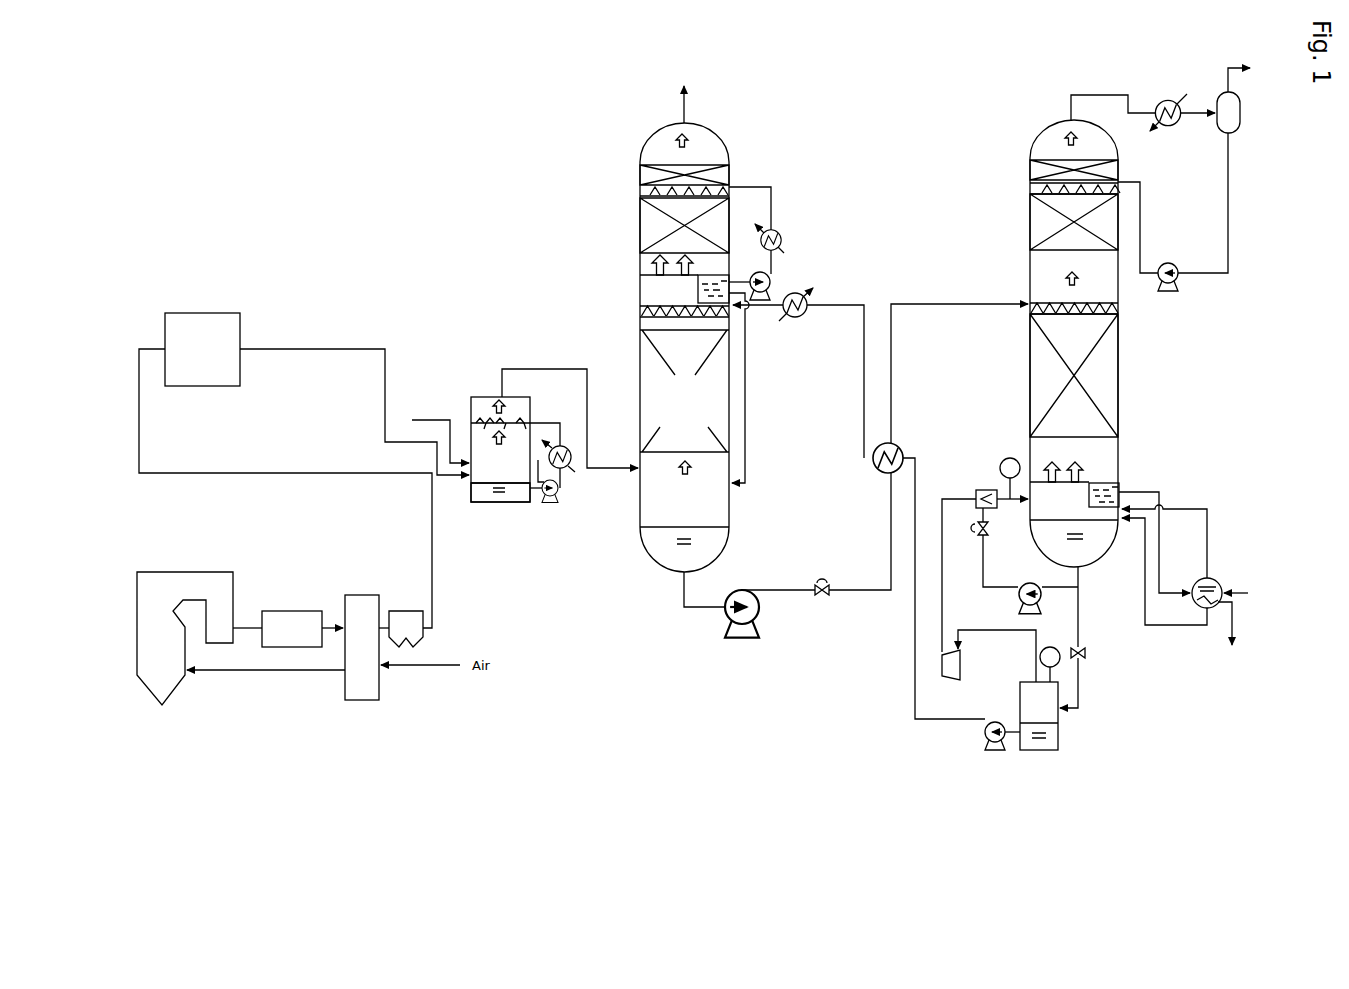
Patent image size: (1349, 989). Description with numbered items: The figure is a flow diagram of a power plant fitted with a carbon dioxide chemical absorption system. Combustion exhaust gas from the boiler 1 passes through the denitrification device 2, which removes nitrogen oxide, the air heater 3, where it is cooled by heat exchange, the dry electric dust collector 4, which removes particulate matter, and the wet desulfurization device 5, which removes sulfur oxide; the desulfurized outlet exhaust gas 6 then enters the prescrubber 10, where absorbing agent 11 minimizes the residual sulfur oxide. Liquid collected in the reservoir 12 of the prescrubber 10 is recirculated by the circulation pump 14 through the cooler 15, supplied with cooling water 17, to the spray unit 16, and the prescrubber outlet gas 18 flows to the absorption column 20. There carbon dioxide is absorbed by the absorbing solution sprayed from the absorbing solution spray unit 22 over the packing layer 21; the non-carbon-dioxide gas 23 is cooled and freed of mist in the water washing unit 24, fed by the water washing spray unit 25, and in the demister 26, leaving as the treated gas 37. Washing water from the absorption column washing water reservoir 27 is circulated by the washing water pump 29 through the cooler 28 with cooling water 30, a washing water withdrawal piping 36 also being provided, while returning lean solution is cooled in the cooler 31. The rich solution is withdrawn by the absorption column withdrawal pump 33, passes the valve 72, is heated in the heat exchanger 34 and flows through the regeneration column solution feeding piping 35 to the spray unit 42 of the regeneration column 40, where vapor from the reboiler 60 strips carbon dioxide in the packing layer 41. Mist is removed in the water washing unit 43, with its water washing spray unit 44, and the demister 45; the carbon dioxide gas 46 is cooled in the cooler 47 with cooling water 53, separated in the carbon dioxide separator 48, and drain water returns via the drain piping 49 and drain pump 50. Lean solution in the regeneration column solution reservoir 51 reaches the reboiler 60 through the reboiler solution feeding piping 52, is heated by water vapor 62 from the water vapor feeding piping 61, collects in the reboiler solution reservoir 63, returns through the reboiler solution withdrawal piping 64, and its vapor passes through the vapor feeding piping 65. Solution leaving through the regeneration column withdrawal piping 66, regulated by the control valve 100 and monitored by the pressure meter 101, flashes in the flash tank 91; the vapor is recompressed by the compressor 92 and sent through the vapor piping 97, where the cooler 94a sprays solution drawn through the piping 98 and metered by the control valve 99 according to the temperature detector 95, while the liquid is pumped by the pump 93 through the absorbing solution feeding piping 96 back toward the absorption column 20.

The boiler 1 is at (218, 584).
The denitrification device 2 is at (300, 611).
The air heater 3 is at (366, 615).
The dry electric dust collector 4 is at (406, 611).
The wet desulfurization device 5 is at (203, 313).
The desulfurized outlet exhaust gas 6 is at (287, 351).
The prescrubber 10 is at (483, 397).
The absorbing agent 11 is at (422, 418).
The reservoir 12 is at (478, 503).
The circulation pump 14 is at (553, 497).
The cooler 15 is at (544, 455).
The spray unit 16 is at (518, 435).
The cooling water 17 is at (566, 470).
The prescrubber outlet gas 18 is at (588, 393).
The absorption column 20 is at (734, 516).
The packing layer 21 is at (684, 391).
The absorbing solution spray unit 22 is at (647, 300).
The non-CO2 gas 23 is at (654, 264).
The water washing unit 24 is at (647, 226).
The water washing spray unit 25 is at (647, 196).
The demister 26 is at (647, 173).
The absorption column washing water reservoir 27 is at (716, 275).
The cooler 28 is at (784, 243).
The washing water pump 29 is at (774, 292).
The cooling water 30 is at (764, 279).
The cooler 31 is at (806, 313).
The absorption column withdrawal pump 33 is at (760, 611).
The heat exchanger 34 is at (886, 474).
The regeneration column solution feeding piping 35 is at (1007, 303).
The washing water withdrawal piping 36 is at (745, 456).
The treated gas 37 is at (690, 134).
The regeneration column 40 is at (1119, 463).
The packing layer 41 is at (1119, 378).
The spray unit 42 is at (1119, 308).
The water washing unit 43 is at (1041, 222).
The water washing spray unit 44 is at (1040, 192).
The demister 45 is at (1040, 170).
The CO2 gas 46 is at (1056, 133).
The cooler 47 is at (1167, 100).
The CO2 separator 48 is at (1240, 112).
The drain piping 49 is at (1230, 222).
The drain pump 50 is at (1180, 289).
The regeneration column solution reservoir 51 is at (1122, 485).
The reboiler solution feeding piping 52 is at (1161, 552).
The cooling water 53 is at (1179, 132).
The reboiler 60 is at (1212, 577).
The water vapor feeding piping 61 is at (1232, 587).
The water vapor 62 is at (1246, 594).
The reboiler solution reservoir 63 is at (1212, 612).
The reboiler solution withdrawal piping 64 is at (1172, 626).
The vapor feeding piping 65 is at (1208, 519).
The regeneration column withdrawal piping 66 is at (1080, 579).
The valve 72 is at (851, 534).
The flash tank 91 is at (1060, 738).
The compressor 92 is at (962, 666).
The pump 93 is at (985, 733).
The cooler 94a is at (976, 491).
The temperature detector 95 is at (1009, 458).
The absorbing solution feeding piping 96 is at (913, 682).
The vapor piping 97 is at (944, 598).
The piping 98 is at (986, 556).
The control valve 99 is at (990, 529).
The control valve 100 is at (1086, 654).
The pressure meter 101 is at (1061, 644).